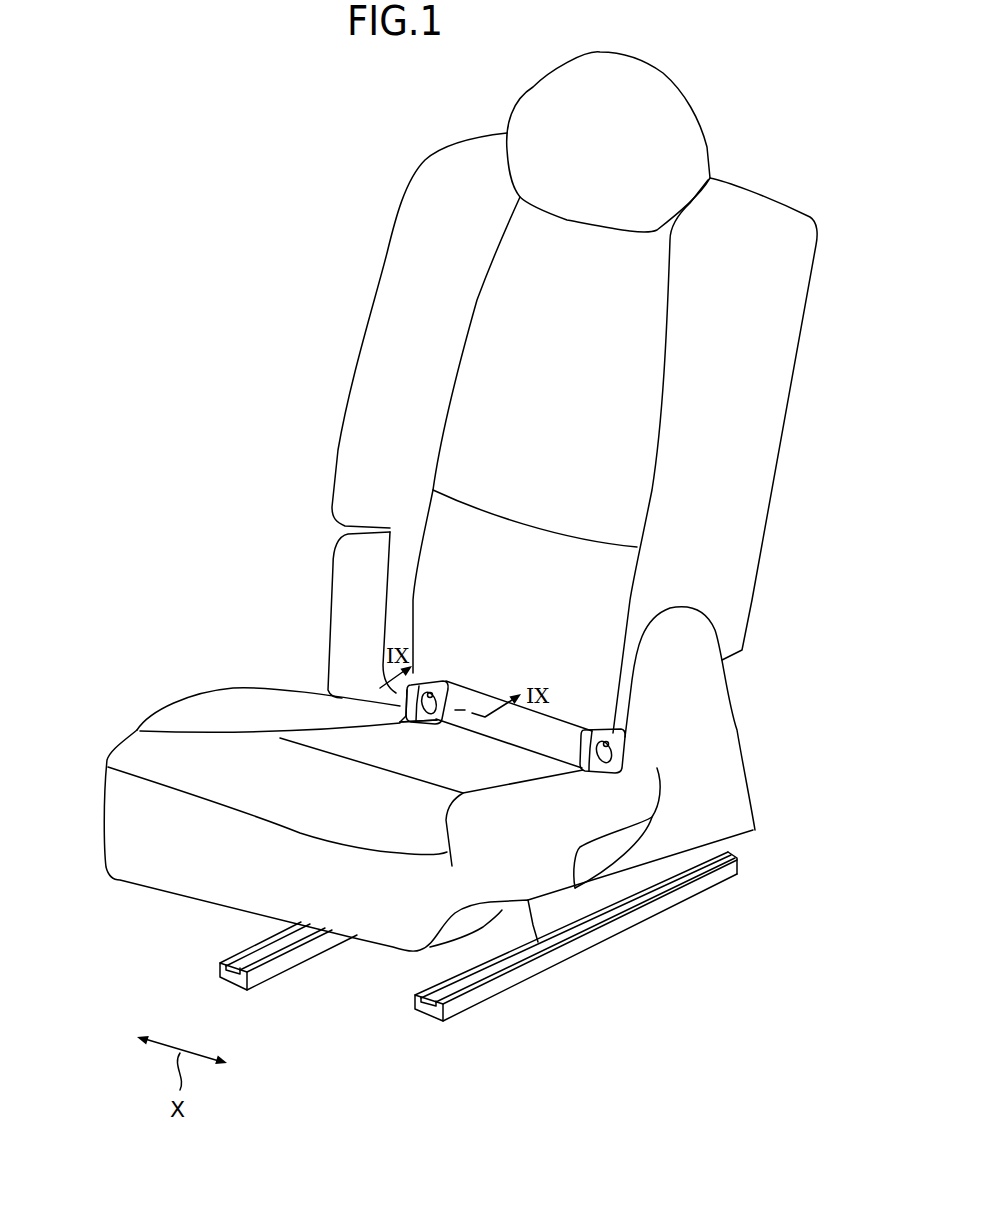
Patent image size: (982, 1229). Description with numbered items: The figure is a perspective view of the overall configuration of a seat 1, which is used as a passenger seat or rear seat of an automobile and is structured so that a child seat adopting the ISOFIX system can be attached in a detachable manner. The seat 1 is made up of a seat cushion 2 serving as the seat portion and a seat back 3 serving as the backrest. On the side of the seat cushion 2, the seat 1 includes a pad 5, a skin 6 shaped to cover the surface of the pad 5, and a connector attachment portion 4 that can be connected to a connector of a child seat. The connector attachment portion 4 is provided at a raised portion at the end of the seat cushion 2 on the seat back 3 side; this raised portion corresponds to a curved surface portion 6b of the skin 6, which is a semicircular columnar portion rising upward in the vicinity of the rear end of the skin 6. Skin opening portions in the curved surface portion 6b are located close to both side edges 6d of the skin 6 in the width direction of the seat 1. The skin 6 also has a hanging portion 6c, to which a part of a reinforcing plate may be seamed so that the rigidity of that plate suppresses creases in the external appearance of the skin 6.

The seat 1 is at (299, 373).
The seat cushion 2 is at (155, 672).
The seat back 3 is at (380, 252).
The connector attachment portion 4 is at (599, 726).
The pad 5 is at (222, 783).
The skin 6 is at (200, 718).
The curved surface portion 6b is at (538, 732).
The hanging portion 6c is at (403, 710).
The side edges 6d is at (390, 698).